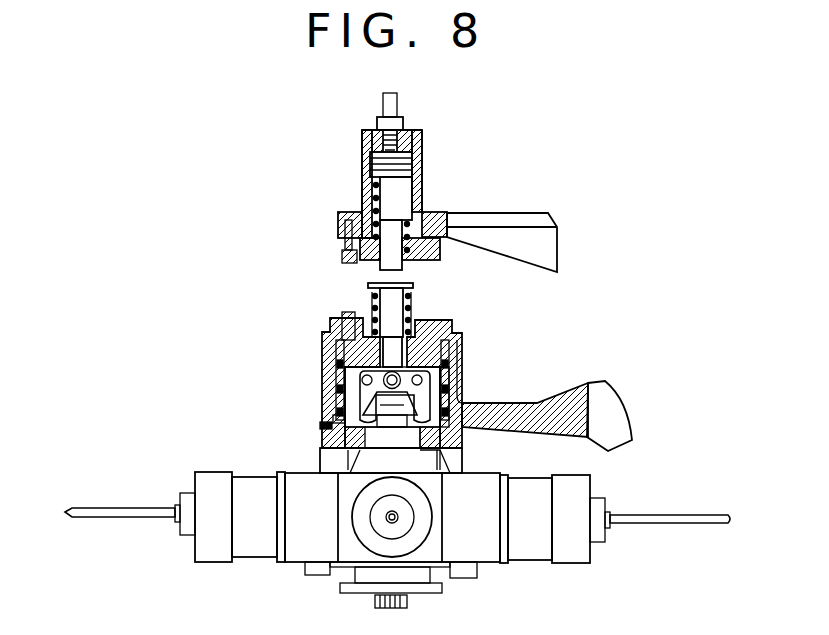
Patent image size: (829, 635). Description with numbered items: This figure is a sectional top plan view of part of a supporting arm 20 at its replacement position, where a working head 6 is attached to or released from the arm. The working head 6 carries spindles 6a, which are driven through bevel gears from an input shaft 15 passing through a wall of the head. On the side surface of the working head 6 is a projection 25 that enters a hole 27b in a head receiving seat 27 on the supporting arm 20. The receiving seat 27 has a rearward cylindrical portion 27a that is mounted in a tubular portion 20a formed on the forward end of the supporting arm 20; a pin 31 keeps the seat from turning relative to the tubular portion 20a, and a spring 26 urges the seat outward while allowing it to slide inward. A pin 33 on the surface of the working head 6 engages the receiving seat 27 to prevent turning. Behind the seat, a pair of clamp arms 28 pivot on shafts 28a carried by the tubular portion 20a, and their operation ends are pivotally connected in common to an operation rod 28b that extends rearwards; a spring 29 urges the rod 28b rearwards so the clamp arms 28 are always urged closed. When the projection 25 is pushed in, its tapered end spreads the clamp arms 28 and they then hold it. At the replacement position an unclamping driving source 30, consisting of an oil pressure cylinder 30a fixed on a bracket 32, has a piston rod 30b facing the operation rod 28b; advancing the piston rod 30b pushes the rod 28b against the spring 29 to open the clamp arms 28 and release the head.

The working head 6 is at (303, 562).
The spindle 6a is at (125, 508).
The input shaft 15 is at (372, 600).
The supporting arm 20 is at (553, 413).
The tubular portion 20a is at (330, 346).
The projection 25 is at (340, 420).
The spring 26 is at (452, 395).
The head receiving seat 27 is at (355, 452).
The cylindrical portion 27a is at (468, 425).
The hole 27b is at (443, 456).
The clamp arm 28 is at (358, 407).
The shaft 28a is at (362, 382).
The operation rod 28b is at (385, 318).
The spring 29 is at (415, 330).
The unclamping driving source 30 is at (360, 144).
The oil pressure cylinder 30a is at (405, 152).
The piston rod 30b is at (402, 265).
The pin 31 is at (325, 430).
The bracket 32 is at (503, 217).
The pin 33 is at (345, 470).